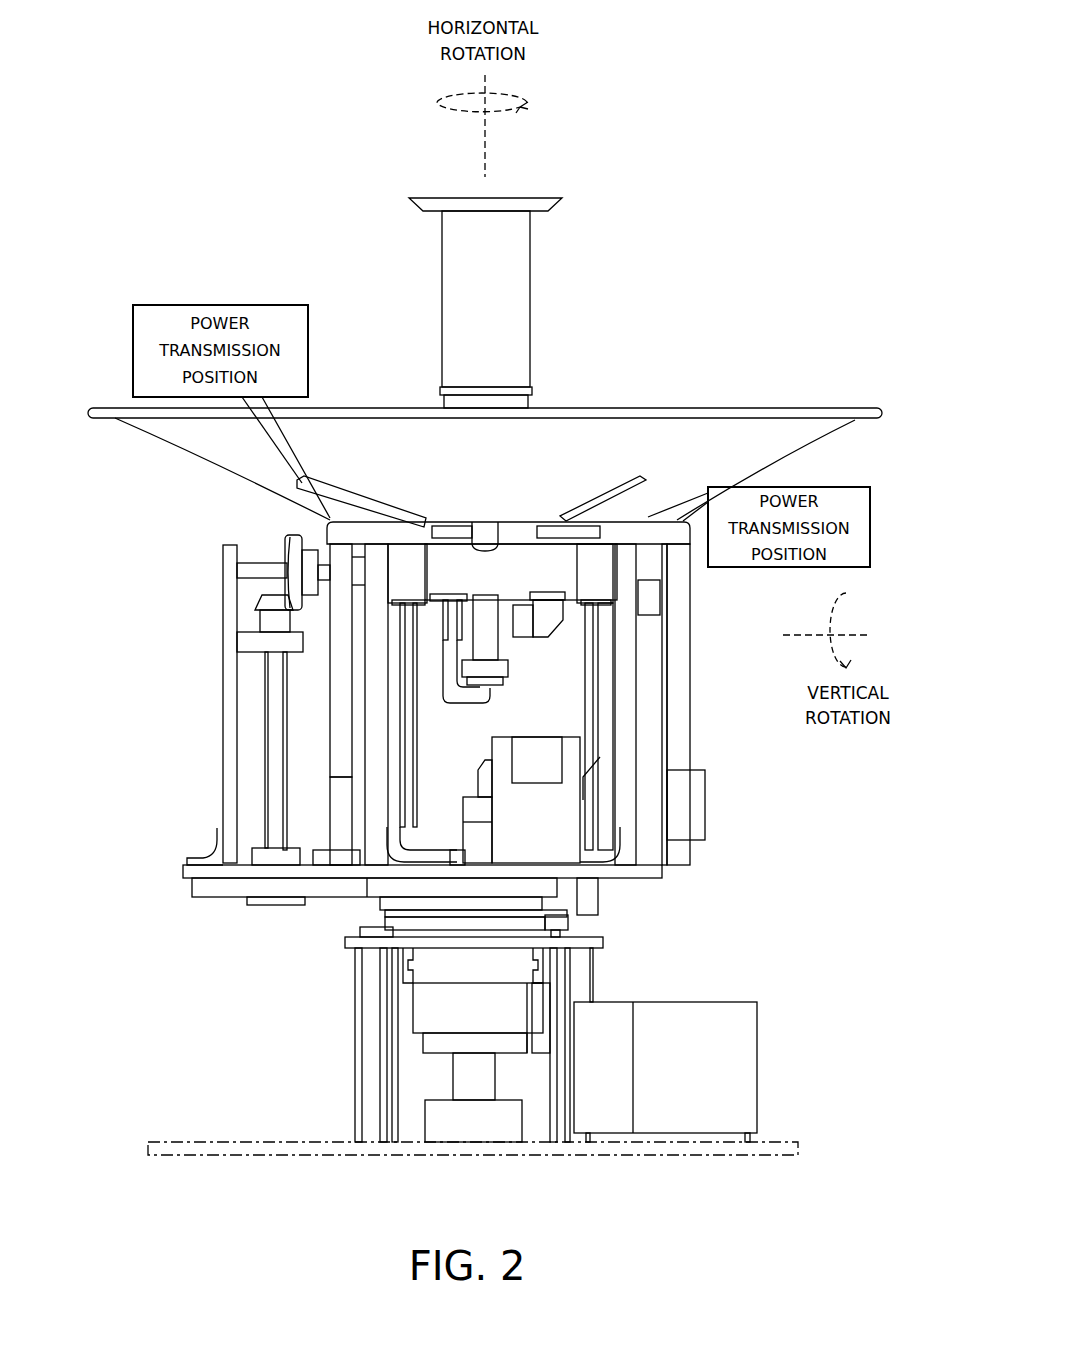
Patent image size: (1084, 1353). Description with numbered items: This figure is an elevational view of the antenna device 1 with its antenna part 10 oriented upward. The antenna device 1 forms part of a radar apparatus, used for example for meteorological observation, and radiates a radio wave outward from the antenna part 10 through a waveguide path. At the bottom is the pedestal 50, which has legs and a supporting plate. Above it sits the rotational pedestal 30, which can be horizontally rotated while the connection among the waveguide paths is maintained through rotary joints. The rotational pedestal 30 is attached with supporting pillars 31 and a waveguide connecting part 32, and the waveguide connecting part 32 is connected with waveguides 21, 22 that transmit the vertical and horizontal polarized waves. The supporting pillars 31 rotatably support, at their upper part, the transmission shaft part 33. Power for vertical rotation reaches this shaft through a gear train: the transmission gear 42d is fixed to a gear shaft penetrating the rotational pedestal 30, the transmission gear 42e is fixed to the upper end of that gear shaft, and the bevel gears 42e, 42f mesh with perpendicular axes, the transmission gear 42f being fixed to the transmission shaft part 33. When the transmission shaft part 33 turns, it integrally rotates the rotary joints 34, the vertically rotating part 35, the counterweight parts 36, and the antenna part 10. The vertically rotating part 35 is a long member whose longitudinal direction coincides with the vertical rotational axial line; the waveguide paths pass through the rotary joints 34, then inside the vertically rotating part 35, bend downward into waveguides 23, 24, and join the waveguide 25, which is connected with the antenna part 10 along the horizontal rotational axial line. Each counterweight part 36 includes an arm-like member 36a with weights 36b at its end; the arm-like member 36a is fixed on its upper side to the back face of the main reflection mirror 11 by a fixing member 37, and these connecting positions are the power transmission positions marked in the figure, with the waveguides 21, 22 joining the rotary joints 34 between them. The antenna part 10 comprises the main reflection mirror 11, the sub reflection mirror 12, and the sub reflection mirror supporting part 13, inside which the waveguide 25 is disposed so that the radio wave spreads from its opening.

The antenna device 1 is at (870, 253).
The antenna part 10 is at (673, 383).
The main reflection mirror 11 is at (582, 412).
The sub reflection mirror 12 is at (513, 199).
The sub reflection mirror supporting part 13 is at (527, 240).
The waveguide 21 is at (412, 760).
The waveguide 22 is at (592, 707).
The waveguide 23 is at (462, 698).
The waveguide 24 is at (533, 628).
The waveguide 25 is at (470, 538).
The rotational pedestal 30 is at (662, 871).
The supporting pillars 31 is at (373, 683).
The waveguide connecting part 32 is at (485, 830).
The transmission shaft part 33 is at (260, 567).
The rotary joints 34 is at (403, 548).
The vertically rotating part 35 is at (515, 553).
The counterweight parts 36 is at (138, 735).
The arm-like member 36a is at (337, 743).
The weights 36b is at (340, 795).
The fixing member 37 is at (660, 478).
The transmission gear 42d is at (200, 885).
The transmission gear 42e is at (258, 601).
The transmission gear 42f is at (292, 543).
The pedestal 50 is at (349, 960).